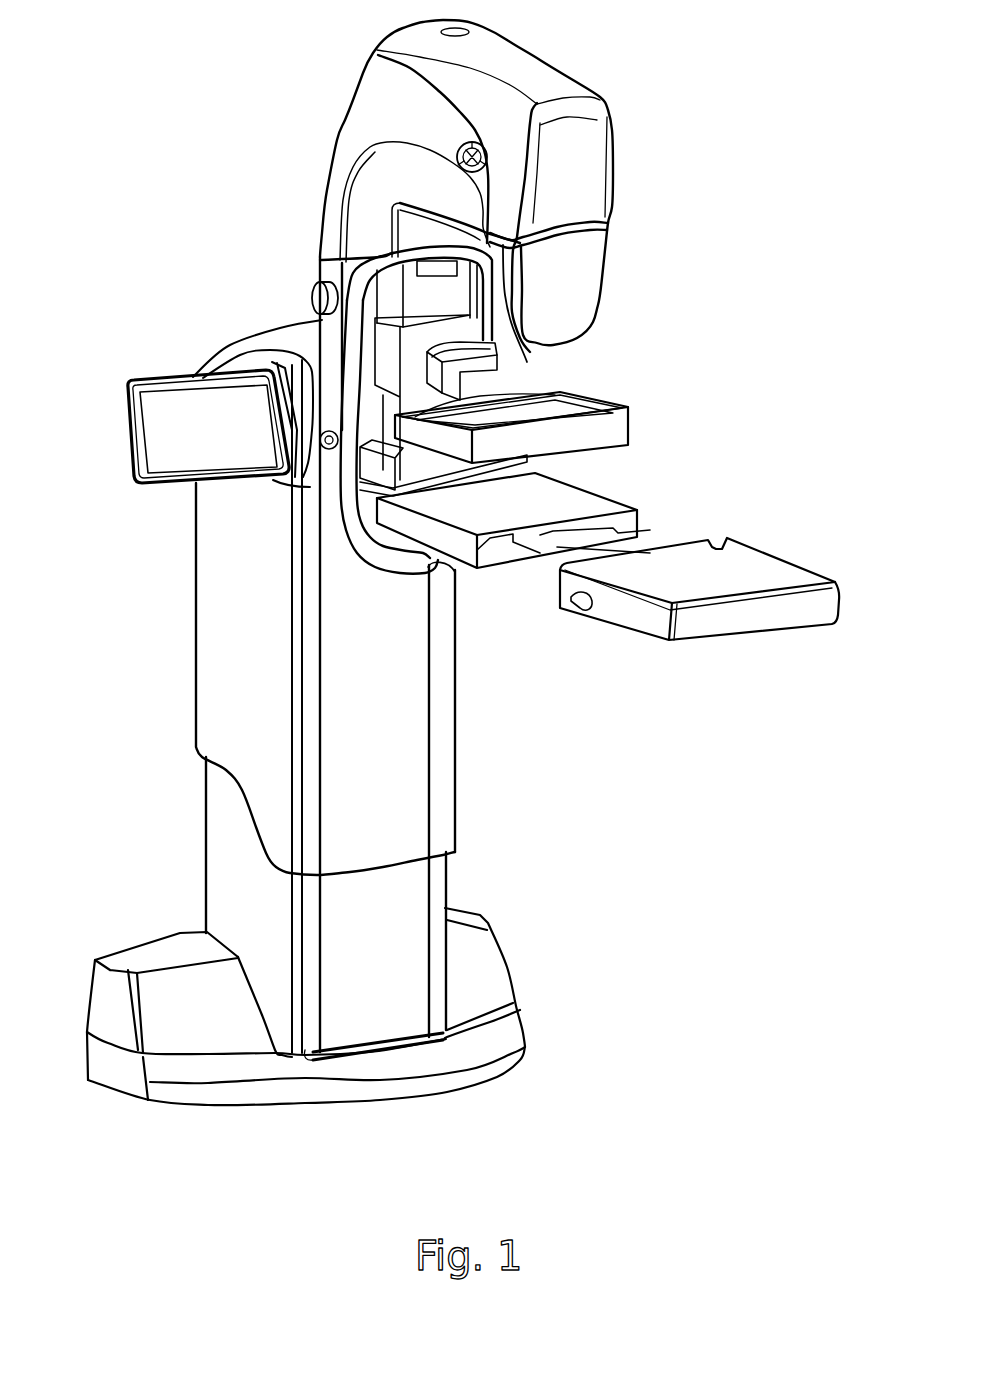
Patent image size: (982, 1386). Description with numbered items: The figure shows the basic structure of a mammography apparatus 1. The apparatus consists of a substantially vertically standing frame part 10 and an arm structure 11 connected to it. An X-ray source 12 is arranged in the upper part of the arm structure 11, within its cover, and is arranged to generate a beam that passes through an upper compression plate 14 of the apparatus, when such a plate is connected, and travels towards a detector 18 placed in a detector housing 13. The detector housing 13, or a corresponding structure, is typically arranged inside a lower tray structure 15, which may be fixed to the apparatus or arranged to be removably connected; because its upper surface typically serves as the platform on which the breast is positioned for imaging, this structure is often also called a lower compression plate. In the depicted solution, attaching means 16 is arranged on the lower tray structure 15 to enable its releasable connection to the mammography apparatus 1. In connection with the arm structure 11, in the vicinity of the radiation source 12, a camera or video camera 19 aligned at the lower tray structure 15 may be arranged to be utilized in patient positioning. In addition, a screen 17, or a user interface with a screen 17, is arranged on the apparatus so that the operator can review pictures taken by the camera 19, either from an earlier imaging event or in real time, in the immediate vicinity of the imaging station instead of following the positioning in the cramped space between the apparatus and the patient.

The mammography apparatus 1 is at (105, 667).
The frame part 10 is at (408, 746).
The arm structure 11 is at (370, 107).
The X-ray source 12 is at (593, 167).
The camera or video camera 19 is at (549, 229).
The detector housing 13 is at (577, 507).
The detector 18 is at (513, 522).
The upper compression plate 14 is at (612, 430).
The lower tray structure 15 is at (810, 607).
The attaching means 16 is at (563, 607).
The screen 17 is at (150, 415).